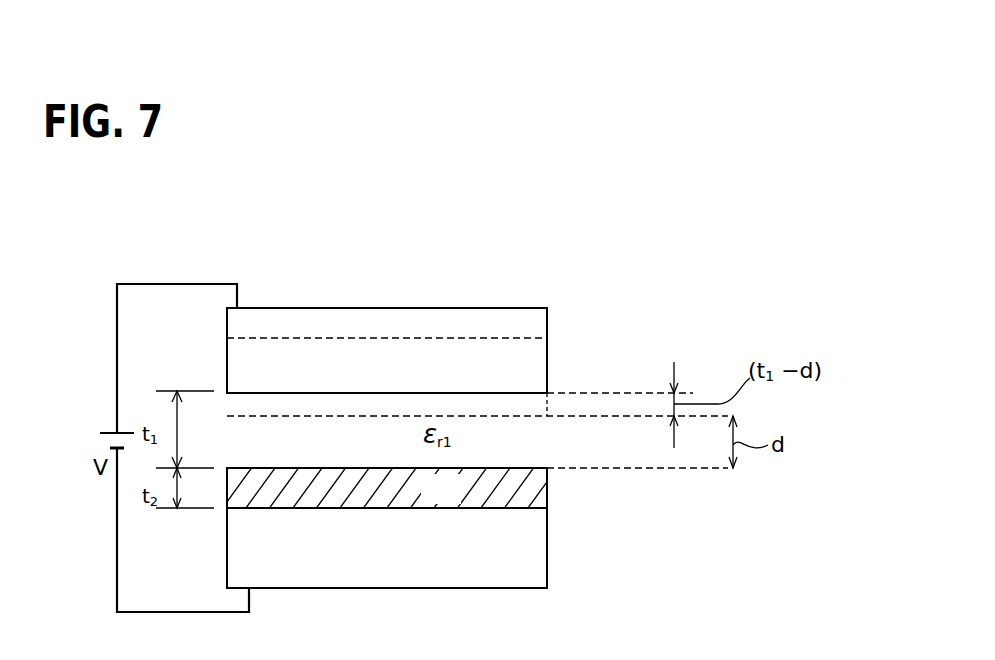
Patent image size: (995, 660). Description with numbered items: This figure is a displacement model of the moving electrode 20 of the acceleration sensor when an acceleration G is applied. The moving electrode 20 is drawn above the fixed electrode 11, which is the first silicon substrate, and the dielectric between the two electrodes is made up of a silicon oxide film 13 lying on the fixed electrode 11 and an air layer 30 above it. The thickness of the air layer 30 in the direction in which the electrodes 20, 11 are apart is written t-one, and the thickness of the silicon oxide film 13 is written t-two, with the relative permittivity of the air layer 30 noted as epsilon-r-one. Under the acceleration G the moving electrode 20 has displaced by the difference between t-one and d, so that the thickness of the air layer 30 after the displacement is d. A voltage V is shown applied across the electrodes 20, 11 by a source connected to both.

The fixed electrode 11 is at (528, 553).
The silicon oxide film 13 is at (538, 488).
The moving electrode 20 is at (528, 360).
The air layer 30 is at (345, 440).